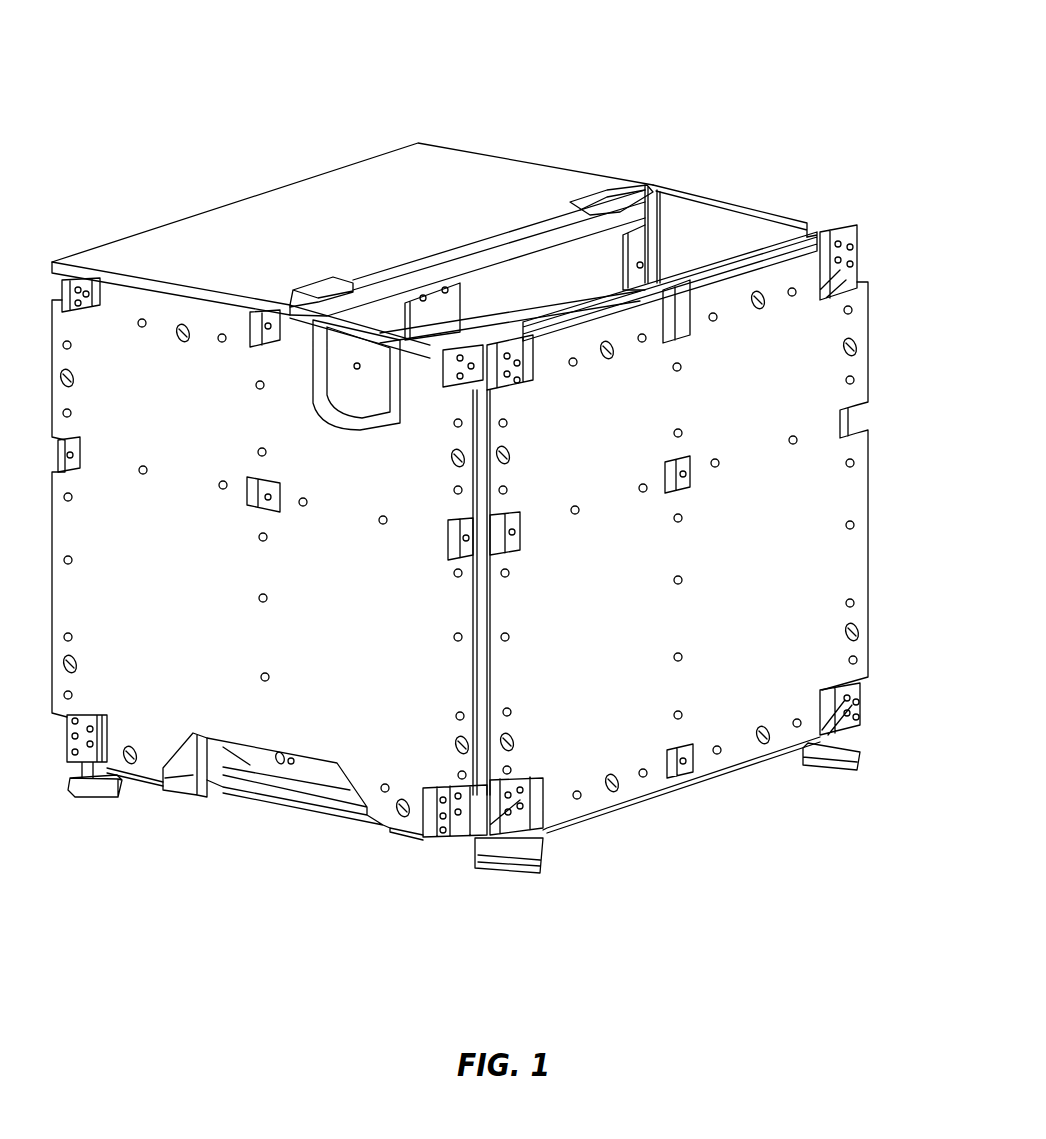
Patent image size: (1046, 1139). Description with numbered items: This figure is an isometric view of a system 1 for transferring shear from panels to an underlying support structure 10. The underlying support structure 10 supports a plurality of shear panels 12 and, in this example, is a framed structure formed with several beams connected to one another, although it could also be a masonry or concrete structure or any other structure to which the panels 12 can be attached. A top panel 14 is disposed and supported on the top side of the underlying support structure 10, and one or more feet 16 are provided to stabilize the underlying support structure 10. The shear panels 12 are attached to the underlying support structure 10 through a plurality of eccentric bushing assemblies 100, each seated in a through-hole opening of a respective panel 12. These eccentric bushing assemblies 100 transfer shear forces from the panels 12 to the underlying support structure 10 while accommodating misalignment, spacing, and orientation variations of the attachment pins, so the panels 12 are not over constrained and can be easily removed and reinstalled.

The system 1 is at (527, 123).
The underlying support structure 10 is at (617, 220).
The shear panel 12 is at (852, 498).
The top panel 14 is at (403, 148).
The foot 16 is at (113, 797).
The eccentric bushing assembly 100 is at (78, 382).